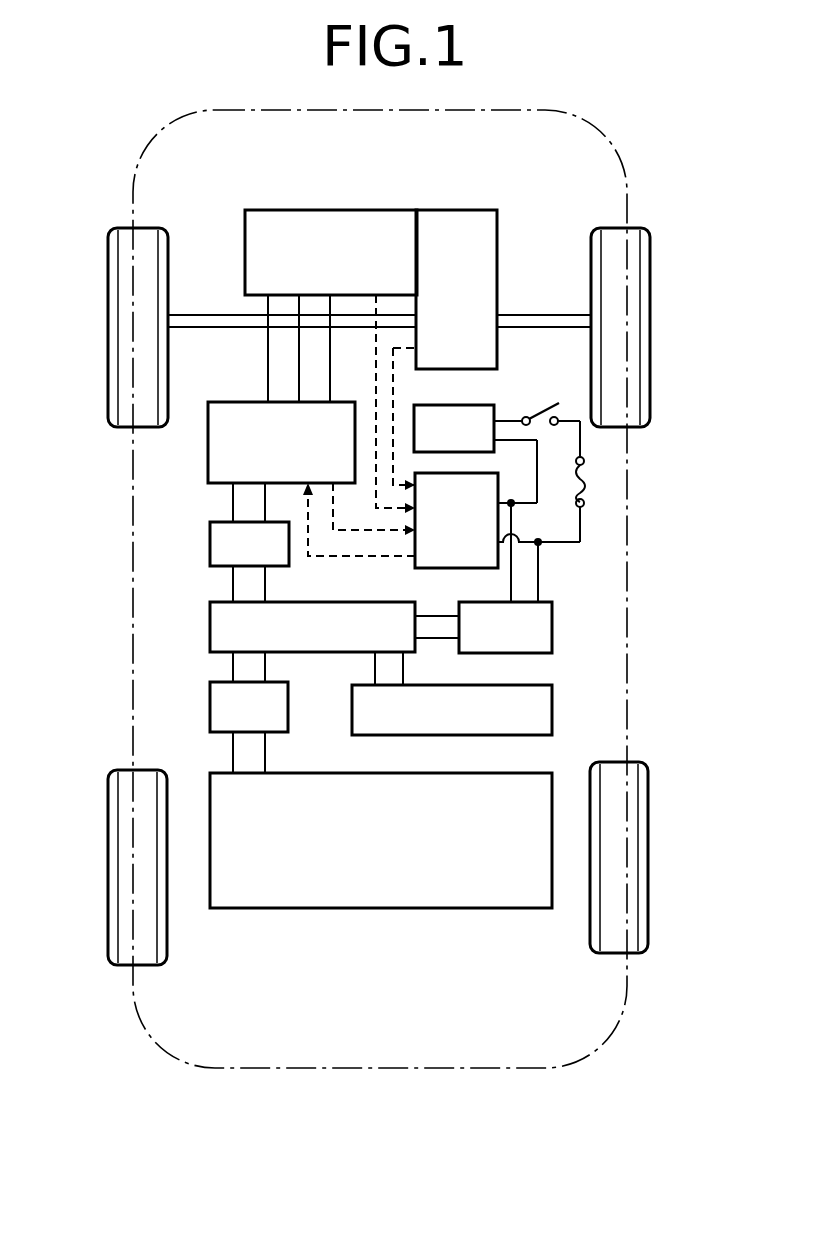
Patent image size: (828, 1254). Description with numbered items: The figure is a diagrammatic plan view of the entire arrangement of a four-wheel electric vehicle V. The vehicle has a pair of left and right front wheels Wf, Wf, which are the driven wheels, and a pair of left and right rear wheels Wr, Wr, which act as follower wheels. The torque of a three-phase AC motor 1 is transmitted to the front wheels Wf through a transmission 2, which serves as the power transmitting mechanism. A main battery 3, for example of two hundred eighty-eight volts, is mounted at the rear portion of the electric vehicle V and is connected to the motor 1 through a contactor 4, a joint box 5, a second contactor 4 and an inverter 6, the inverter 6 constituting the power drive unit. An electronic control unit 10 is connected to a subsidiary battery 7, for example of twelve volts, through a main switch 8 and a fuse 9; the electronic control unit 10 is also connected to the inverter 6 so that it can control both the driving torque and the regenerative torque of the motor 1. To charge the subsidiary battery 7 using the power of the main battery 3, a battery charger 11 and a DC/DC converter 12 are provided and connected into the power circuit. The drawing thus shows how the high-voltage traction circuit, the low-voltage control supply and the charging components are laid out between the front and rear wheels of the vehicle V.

The three-phase AC motor 1 is at (321, 268).
The transmission 2 is at (446, 313).
The main battery 3 is at (368, 856).
The contactor 4 is at (241, 561).
The joint box 5 is at (304, 643).
The inverter 6 is at (271, 458).
The subsidiary battery 7 is at (445, 446).
The main switch 8 is at (536, 400).
The fuse 9 is at (586, 492).
The electronic control unit 10 is at (439, 536).
The battery charger 11 is at (434, 725).
The DC/DC converter 12 is at (488, 644).
The electric vehicle V is at (630, 572).
The front wheels Wf is at (108, 308).
The rear wheels Wr is at (108, 853).